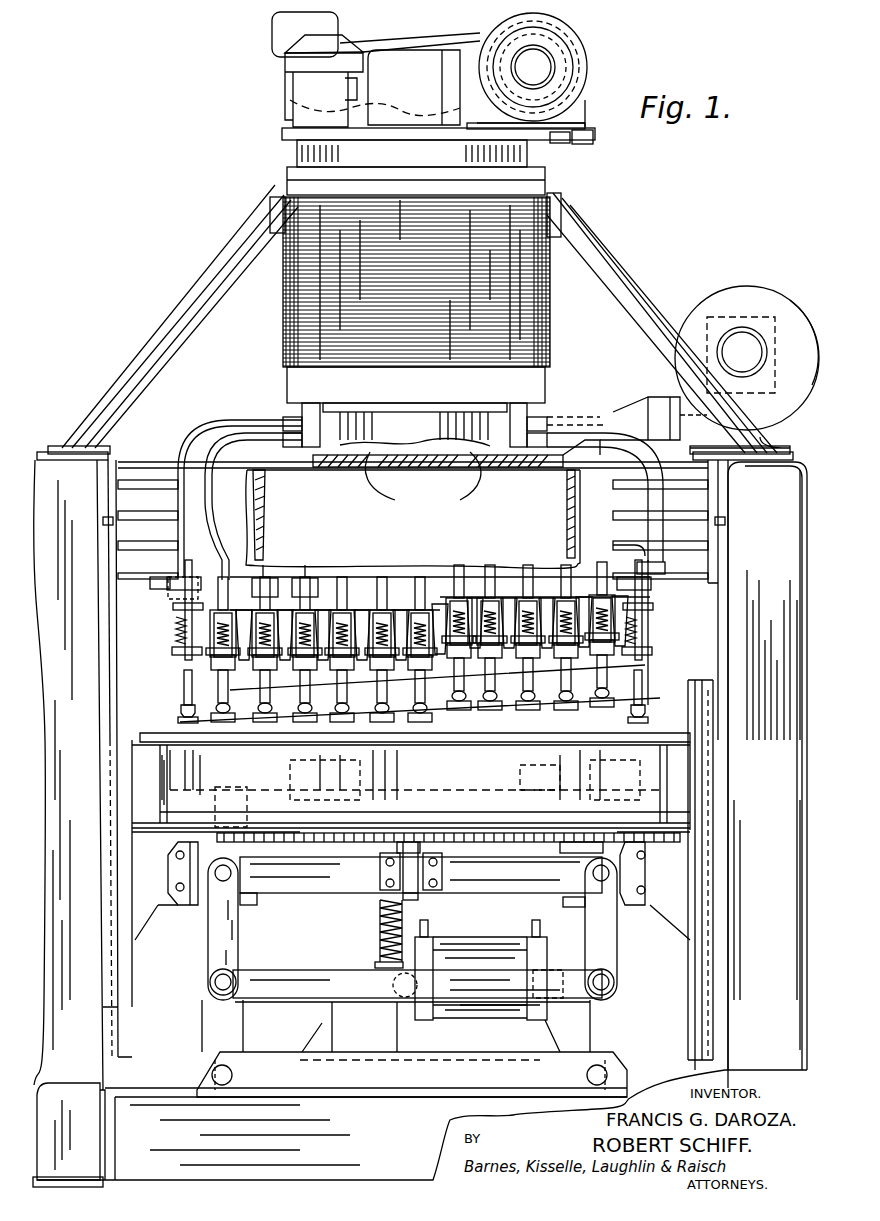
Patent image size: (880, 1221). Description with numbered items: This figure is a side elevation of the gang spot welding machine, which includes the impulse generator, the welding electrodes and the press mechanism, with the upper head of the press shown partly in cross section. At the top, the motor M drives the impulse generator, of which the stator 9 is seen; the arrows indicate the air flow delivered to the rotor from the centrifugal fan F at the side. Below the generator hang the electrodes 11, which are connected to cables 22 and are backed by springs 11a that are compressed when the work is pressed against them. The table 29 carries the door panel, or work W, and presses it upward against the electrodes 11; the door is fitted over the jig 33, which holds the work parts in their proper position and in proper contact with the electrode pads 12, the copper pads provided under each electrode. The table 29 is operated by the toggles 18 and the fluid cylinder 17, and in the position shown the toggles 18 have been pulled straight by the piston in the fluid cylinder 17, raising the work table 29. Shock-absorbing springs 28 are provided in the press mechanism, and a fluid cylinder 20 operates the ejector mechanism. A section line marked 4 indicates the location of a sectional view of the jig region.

The motor M is at (567, 40).
The stator 9 is at (282, 298).
The cables 22 is at (222, 440).
The centrifugal fan F is at (764, 300).
The electrodes 11 is at (188, 690).
The springs 11a is at (184, 638).
The jig 33 is at (645, 716).
The work W is at (205, 690).
The electrode pads 12 is at (185, 714).
The section line 4- 4 is at (808, 742).
The fluid cylinder 20 is at (368, 800).
The toggles 18 is at (235, 932).
The shock-absorbing springs 28 is at (378, 918).
The fluid cylinder 17 is at (480, 952).
The table 29 is at (660, 742).